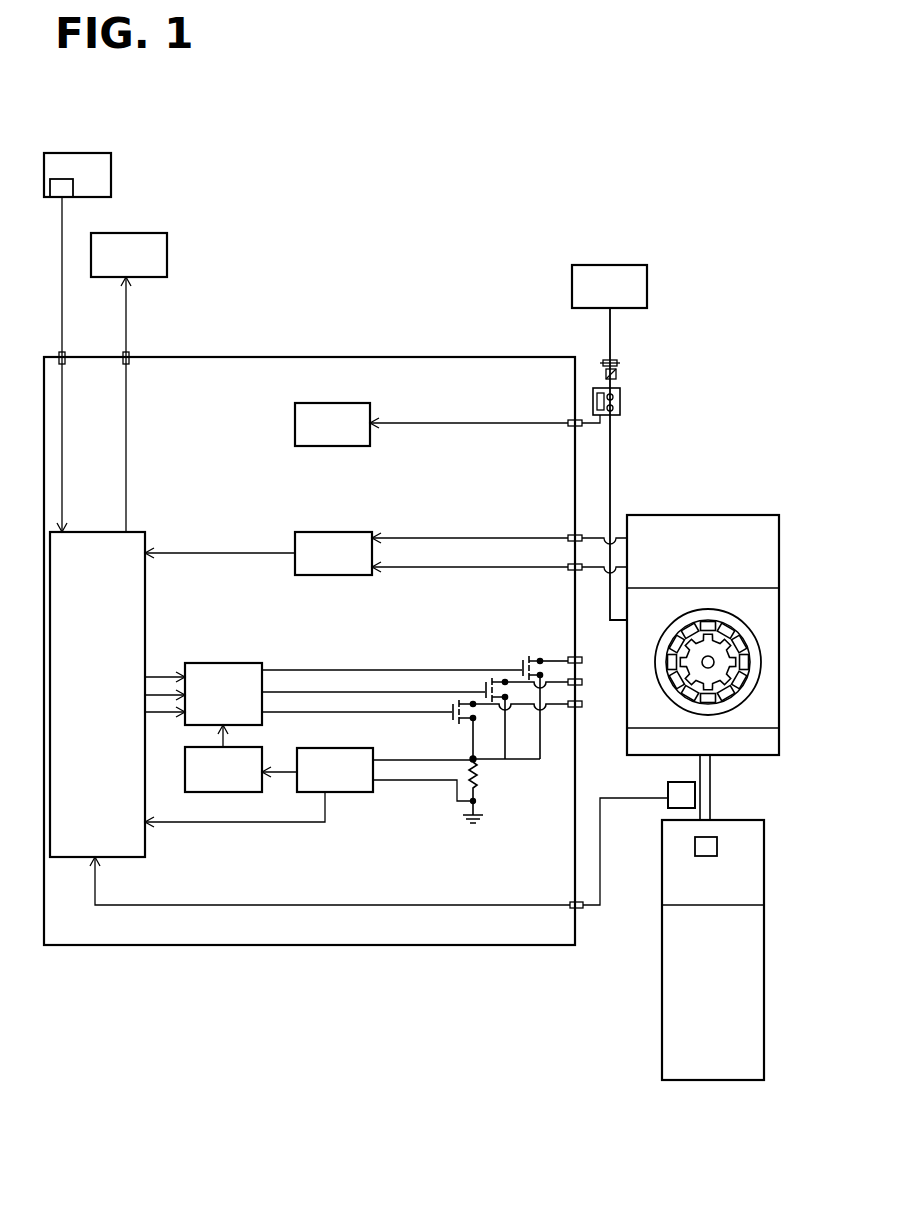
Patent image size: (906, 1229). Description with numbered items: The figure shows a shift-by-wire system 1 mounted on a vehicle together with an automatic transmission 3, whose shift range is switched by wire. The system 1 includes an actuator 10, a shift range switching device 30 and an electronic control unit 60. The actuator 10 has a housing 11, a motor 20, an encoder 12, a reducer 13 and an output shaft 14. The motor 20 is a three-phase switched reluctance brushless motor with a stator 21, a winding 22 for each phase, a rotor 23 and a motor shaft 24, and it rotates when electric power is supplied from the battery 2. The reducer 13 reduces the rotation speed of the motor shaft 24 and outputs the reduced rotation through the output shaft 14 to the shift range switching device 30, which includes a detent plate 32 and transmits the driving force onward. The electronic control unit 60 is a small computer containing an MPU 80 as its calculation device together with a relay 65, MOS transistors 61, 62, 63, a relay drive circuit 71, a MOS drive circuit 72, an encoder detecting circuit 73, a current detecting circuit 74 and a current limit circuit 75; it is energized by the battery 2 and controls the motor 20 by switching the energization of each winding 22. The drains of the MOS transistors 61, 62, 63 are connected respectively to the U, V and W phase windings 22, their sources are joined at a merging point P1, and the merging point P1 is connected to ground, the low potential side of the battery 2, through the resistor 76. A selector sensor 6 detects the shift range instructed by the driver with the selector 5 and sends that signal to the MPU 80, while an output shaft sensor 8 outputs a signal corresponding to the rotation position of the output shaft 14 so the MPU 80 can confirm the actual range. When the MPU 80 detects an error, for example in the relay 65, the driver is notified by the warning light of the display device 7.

The shift-by-wire system 1 is at (318, 188).
The battery 2 is at (606, 264).
The automatic transmission 3 is at (764, 1001).
The selector 5 is at (86, 160).
The selector sensor 6 is at (61, 178).
The display device 7 is at (129, 236).
The output shaft sensor 8 is at (667, 787).
The actuator 10 is at (706, 512).
The housing 11 is at (774, 595).
The encoder 12 is at (772, 543).
The reducer 13 is at (772, 742).
The output shaft 14 is at (712, 781).
The motor 20 is at (683, 596).
The stator 21 is at (748, 628).
The winding 22 is at (752, 660).
The rotor 23 is at (720, 672).
The motor shaft 24 is at (708, 668).
The shift range switching device 30 is at (764, 868).
The detent plate 32 is at (694, 847).
The electronic control unit 60 is at (243, 355).
The MOS transistor 61 is at (522, 660).
The MOS transistor 62 is at (487, 681).
The MOS transistor 63 is at (455, 703).
The relay 65 is at (620, 401).
The relay drive circuit 71 is at (331, 412).
The MOS drive circuit 72 is at (222, 672).
The encoder detecting circuit 73 is at (334, 538).
The current detecting circuit 74 is at (354, 794).
The current limit circuit 75 is at (190, 772).
The resistor 76 is at (478, 795).
The MPU 80 is at (145, 597).
The merging point P1 is at (477, 762).